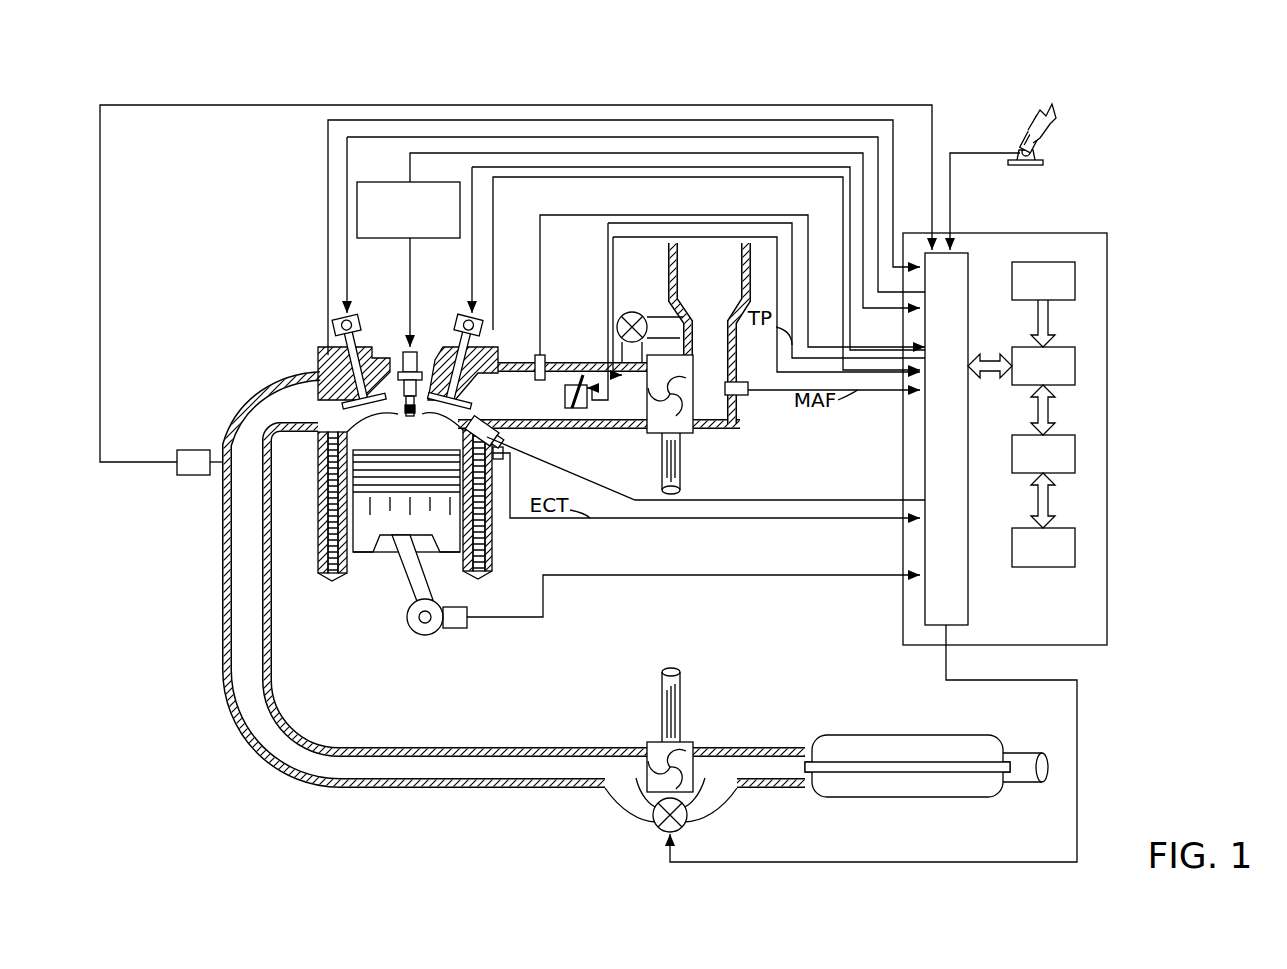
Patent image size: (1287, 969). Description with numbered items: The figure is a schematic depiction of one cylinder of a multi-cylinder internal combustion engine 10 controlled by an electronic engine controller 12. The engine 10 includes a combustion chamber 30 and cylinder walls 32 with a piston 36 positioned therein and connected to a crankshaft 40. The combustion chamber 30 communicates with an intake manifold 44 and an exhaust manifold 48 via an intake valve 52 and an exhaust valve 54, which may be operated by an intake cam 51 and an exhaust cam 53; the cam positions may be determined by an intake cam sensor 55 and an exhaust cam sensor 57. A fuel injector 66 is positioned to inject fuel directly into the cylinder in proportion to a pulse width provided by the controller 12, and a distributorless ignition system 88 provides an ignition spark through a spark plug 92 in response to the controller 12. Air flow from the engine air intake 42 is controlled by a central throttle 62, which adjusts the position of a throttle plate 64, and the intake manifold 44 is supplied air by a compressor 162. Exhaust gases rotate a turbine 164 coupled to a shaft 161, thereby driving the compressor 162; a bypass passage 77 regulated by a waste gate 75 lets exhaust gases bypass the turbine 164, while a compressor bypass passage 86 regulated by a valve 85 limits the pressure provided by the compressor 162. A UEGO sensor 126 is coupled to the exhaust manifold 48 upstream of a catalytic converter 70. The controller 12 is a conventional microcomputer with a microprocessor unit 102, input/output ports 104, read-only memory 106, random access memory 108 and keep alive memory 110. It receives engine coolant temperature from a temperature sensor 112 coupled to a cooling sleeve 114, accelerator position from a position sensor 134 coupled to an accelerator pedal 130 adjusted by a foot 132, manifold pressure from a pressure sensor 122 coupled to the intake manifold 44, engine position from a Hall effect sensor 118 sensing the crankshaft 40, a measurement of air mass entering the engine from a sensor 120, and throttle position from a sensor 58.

The internal combustion engine 10 is at (258, 303).
The electronic engine controller 12 is at (1105, 234).
The combustion chamber 30 is at (336, 522).
The cylinder walls 32 is at (354, 580).
The piston 36 is at (392, 535).
The crankshaft 40 is at (416, 634).
The engine air intake 42 is at (702, 283).
The intake manifold 44 is at (512, 406).
The exhaust manifold 48 is at (280, 412).
The intake cam 51 is at (468, 316).
The intake valve 52 is at (412, 355).
The exhaust cam 53 is at (352, 316).
The exhaust valve 54 is at (322, 380).
The intake cam sensor 55 is at (480, 336).
The exhaust cam sensor 57 is at (336, 330).
The throttle position sensor 58 is at (586, 410).
The central throttle 62 is at (572, 380).
The throttle plate 64 is at (580, 376).
The fuel injector 66 is at (498, 452).
The catalytic converter 70 is at (818, 798).
The waste gate 75 is at (684, 828).
The bypass passage 77 is at (624, 800).
The valve 85 is at (634, 312).
The compressor bypass passage 86 is at (660, 320).
The distributorless ignition system 88 is at (368, 184).
The spark plug 92 is at (404, 352).
The microprocessor unit 102 is at (1076, 370).
The input/output ports 104 is at (970, 262).
The read-only memory 106 is at (1076, 282).
The random access memory 108 is at (1076, 460).
The keep alive memory 110 is at (1076, 552).
The temperature sensor 112 is at (497, 470).
The cooling sleeve 114 is at (492, 550).
The Hall effect sensor 118 is at (446, 632).
The air mass sensor 120 is at (736, 382).
The pressure sensor 122 is at (542, 345).
The UEGO sensor 126 is at (177, 456).
The accelerator pedal 130 is at (1012, 133).
The foot 132 is at (1050, 112).
The position sensor 134 is at (1040, 157).
The shaft 161 is at (682, 482).
The compressor 162 is at (692, 434).
The turbine 164 is at (652, 746).